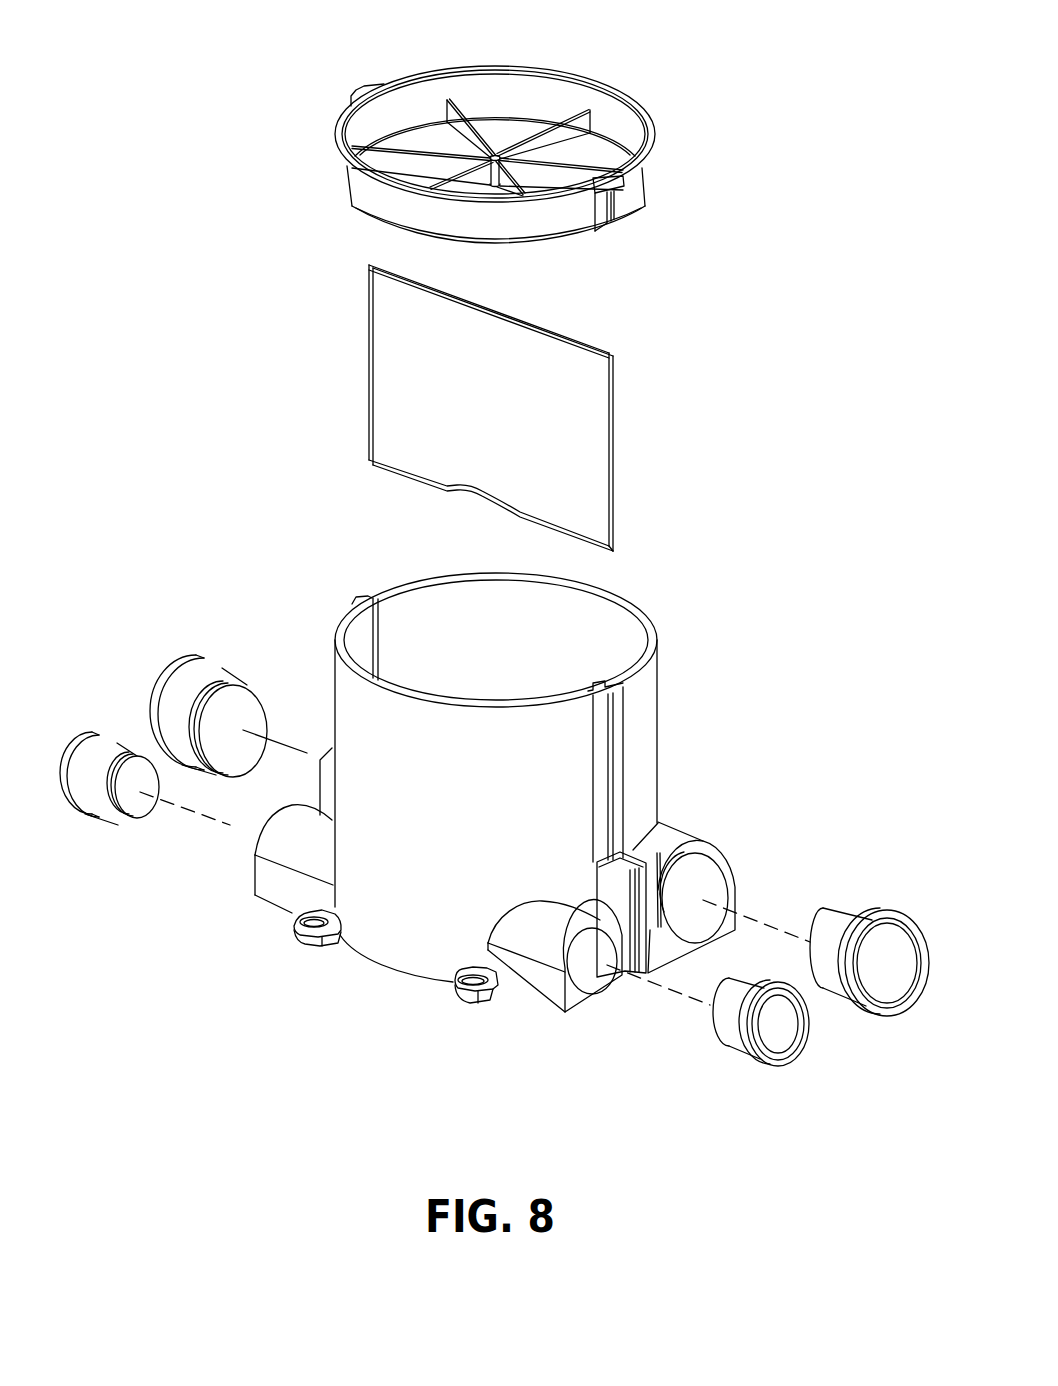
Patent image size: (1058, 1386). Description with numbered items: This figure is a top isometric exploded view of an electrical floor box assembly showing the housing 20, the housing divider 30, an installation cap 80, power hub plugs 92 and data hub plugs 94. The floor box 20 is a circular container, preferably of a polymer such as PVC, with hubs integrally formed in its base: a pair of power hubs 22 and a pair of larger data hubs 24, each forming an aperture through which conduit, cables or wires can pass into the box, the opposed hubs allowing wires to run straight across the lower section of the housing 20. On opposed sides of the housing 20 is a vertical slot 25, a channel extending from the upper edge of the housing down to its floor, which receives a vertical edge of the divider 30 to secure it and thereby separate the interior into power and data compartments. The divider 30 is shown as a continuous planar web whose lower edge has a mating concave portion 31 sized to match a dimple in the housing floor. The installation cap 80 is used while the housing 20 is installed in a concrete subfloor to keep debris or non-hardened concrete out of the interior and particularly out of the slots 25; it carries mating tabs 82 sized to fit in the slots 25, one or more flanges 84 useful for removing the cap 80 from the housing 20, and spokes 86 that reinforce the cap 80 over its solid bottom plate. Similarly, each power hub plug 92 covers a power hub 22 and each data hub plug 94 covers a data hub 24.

The floor box 20 is at (518, 767).
The power hub 22 is at (607, 965).
The data hub 24 is at (708, 842).
The vertical slot 25 is at (372, 600).
The housing divider 30 is at (498, 408).
The mating concave portion 31 is at (470, 488).
The installation cap 80 is at (642, 103).
The mating tab 82 is at (618, 200).
The flange 84 is at (363, 87).
The spoke 86 is at (472, 128).
The power hub plug 92 is at (778, 1062).
The data hub plug 94 is at (898, 1013).